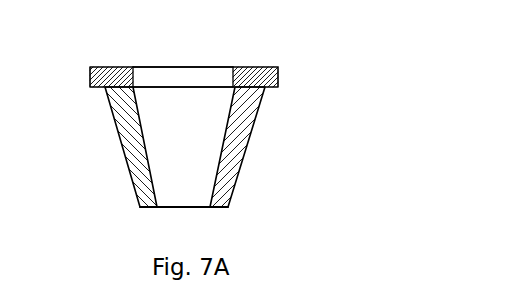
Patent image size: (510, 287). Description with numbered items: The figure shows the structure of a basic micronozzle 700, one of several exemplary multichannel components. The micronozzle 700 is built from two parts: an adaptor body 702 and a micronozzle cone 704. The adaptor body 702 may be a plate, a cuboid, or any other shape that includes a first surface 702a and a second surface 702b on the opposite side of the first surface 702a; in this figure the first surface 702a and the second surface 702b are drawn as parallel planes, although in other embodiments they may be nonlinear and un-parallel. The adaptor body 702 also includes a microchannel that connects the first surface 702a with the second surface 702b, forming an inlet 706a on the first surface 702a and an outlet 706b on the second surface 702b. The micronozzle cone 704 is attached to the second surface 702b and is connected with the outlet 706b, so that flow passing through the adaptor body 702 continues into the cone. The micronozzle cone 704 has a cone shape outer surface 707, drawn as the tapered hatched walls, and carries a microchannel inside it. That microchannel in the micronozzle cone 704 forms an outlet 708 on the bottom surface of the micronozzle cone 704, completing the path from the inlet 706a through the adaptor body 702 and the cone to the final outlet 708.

The micronozzle 700 is at (262, 41).
The adaptor body 702 is at (278, 80).
The first surface 702a is at (112, 67).
The second surface 702b is at (266, 91).
The micronozzle cone 704 is at (237, 182).
The inlet 706a is at (195, 67).
The outlet 706b is at (155, 87).
The cone shape outer surface 707 is at (118, 129).
The outlet 708 is at (188, 207).